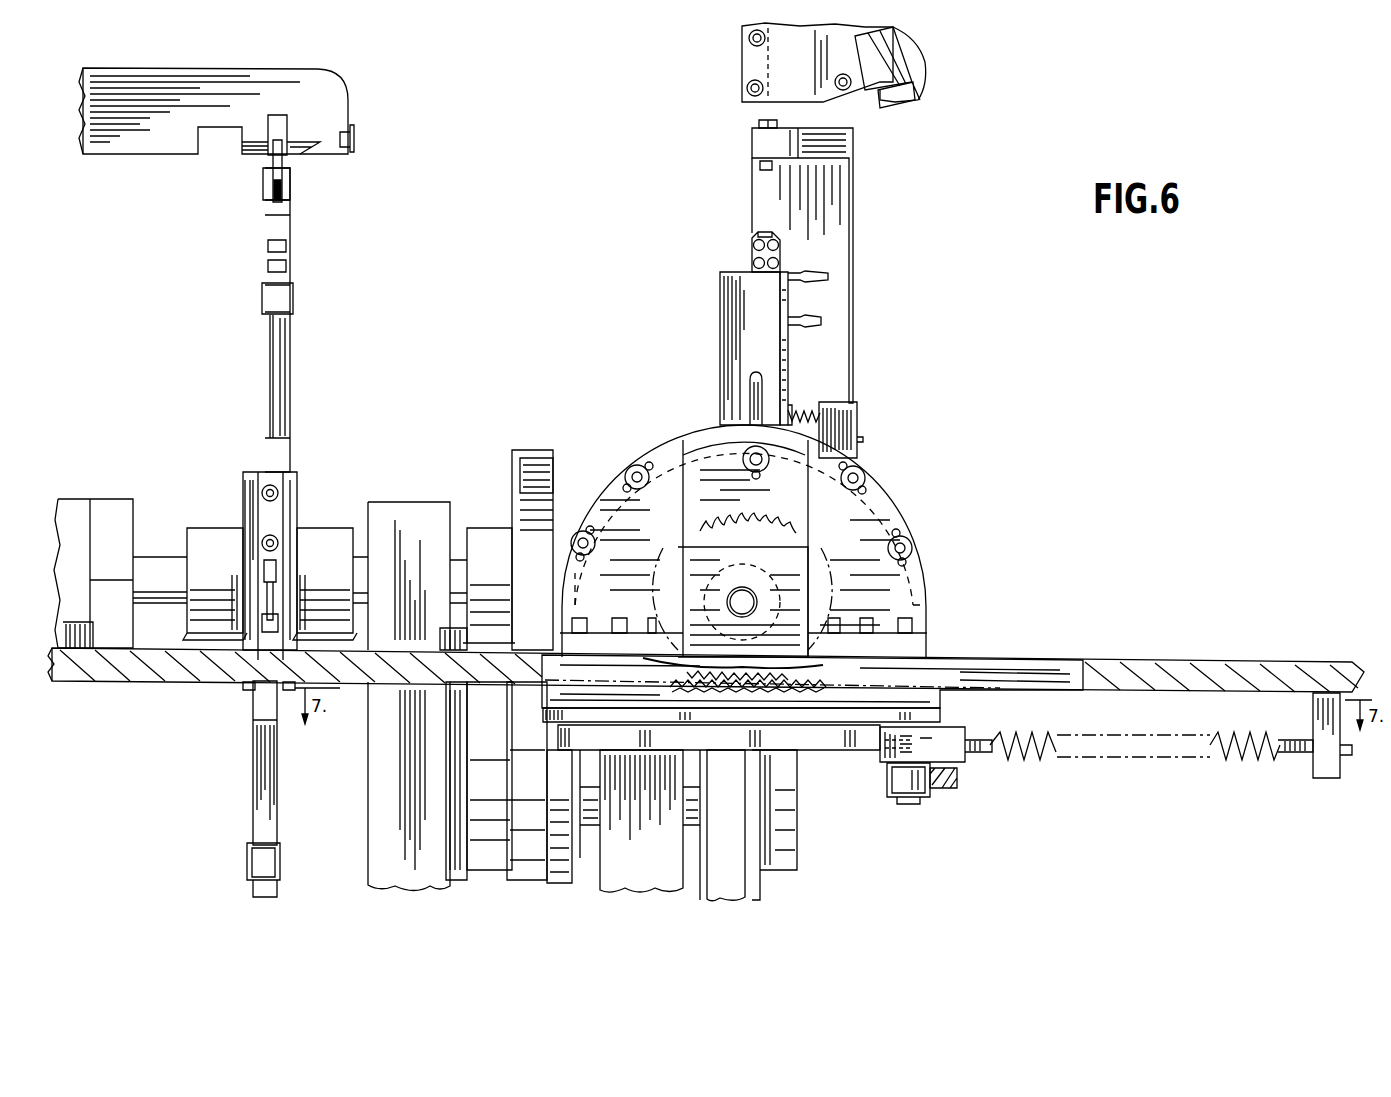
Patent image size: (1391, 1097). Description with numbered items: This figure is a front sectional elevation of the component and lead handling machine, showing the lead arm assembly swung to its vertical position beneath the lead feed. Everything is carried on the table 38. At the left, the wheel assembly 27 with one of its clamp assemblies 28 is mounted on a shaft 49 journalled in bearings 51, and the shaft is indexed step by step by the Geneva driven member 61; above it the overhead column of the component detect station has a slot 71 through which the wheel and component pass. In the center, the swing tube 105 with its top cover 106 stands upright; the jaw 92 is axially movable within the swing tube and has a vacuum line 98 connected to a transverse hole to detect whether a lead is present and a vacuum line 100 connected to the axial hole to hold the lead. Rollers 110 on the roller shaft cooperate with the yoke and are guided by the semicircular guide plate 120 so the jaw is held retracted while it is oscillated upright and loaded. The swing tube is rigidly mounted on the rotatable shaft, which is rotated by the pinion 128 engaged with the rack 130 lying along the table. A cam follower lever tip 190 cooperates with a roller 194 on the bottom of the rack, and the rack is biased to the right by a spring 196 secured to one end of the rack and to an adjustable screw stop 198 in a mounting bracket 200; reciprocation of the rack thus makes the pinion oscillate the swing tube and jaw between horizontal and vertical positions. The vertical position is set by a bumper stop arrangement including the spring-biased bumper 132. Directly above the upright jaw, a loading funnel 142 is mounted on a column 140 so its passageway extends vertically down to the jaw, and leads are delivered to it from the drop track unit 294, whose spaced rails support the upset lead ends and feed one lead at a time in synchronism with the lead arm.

The wheel assembly 27 is at (320, 306).
The clamp assembly 28 is at (260, 163).
The table 38 is at (1212, 650).
The shaft 49 is at (173, 565).
The bearings 51 is at (398, 505).
The Geneva driven member 61 is at (512, 464).
The slot 71 is at (287, 130).
The jaw 92 is at (751, 250).
The vacuum line 98 is at (822, 272).
The vacuum line 100 is at (816, 320).
The swing tube 105 is at (719, 345).
The top cover 106 is at (790, 355).
The rollers 110 is at (757, 452).
The semicircular plate 120 is at (702, 445).
The pinion 128 is at (736, 530).
The rack 130 is at (895, 700).
The bumper 132 is at (790, 408).
The column 140 is at (855, 148).
The loading funnel 142 is at (758, 122).
The tip 190 is at (953, 787).
The roller 194 is at (886, 786).
The spring 196 is at (1230, 740).
The adjustable screw stop 198 is at (1302, 742).
The mounting bracket 200 is at (1313, 780).
The drop track unit 294 is at (740, 59).